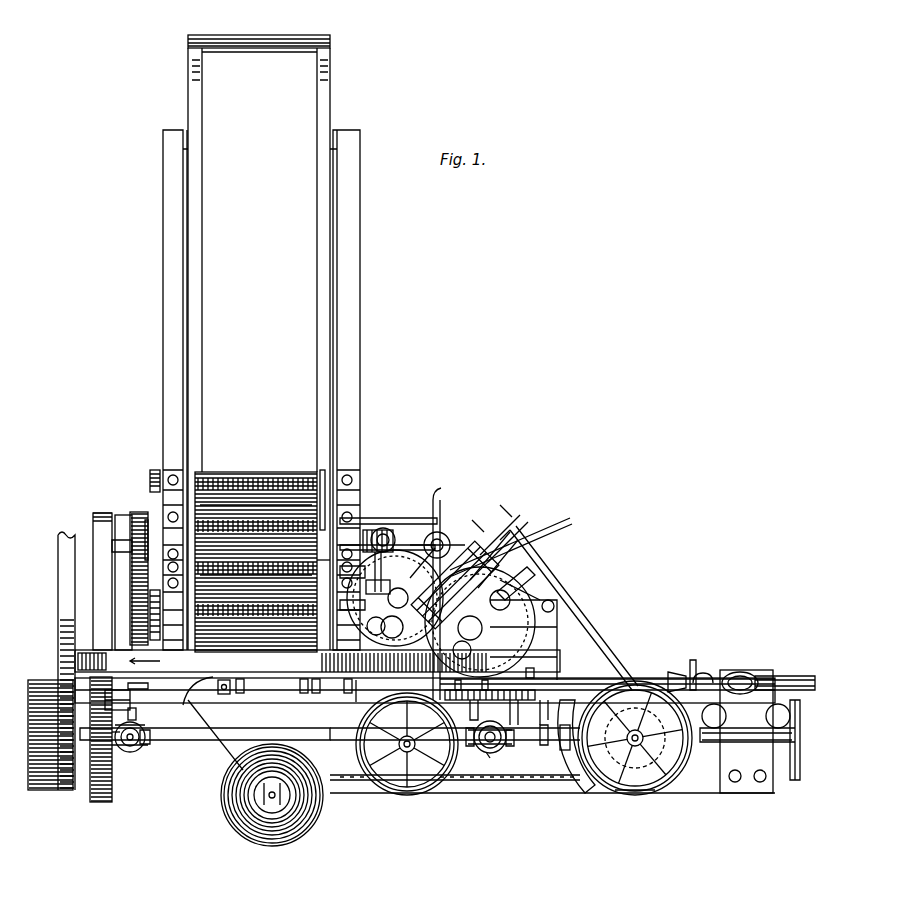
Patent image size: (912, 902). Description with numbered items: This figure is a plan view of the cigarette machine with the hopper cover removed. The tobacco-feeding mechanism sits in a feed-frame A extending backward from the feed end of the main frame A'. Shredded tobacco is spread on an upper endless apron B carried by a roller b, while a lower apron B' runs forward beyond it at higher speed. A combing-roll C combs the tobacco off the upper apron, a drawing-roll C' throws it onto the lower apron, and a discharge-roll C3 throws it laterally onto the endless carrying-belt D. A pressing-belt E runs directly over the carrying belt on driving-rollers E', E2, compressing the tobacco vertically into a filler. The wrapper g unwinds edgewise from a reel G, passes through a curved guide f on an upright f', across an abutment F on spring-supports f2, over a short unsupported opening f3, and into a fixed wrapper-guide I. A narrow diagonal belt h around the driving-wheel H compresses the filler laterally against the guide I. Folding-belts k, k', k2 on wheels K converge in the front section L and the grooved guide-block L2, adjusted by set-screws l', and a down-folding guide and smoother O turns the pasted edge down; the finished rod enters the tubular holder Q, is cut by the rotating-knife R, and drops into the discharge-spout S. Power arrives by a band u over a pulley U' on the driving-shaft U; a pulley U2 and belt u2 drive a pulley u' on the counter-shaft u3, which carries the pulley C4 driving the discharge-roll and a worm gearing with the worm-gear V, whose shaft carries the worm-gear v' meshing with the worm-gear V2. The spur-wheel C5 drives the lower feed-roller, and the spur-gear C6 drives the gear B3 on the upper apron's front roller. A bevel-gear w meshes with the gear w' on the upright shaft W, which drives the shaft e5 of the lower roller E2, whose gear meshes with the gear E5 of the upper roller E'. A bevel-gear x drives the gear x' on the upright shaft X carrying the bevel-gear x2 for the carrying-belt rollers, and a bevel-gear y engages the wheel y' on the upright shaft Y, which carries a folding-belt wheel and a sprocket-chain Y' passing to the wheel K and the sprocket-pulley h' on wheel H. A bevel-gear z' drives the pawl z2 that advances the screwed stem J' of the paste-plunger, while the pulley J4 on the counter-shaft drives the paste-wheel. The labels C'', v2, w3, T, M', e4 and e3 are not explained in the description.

The feed-frame A is at (250, 390).
The main frame A' is at (425, 707).
The upper endless apron B is at (259, 342).
The apron roller b is at (259, 53).
The lower endless apron B' is at (256, 567).
The apron-roller gear B3 is at (119, 559).
The combing-roll C is at (247, 562).
The drawing-roll C' is at (313, 569).
The brush roller C'' is at (256, 491).
The discharge-roll C3 is at (134, 584).
The counter-shaft pulley C4 is at (124, 518).
The spur-wheel C5 is at (162, 615).
The spur-gear C6 is at (150, 462).
The driving band u is at (55, 661).
The counter-shaft pulley u' is at (90, 521).
The belt u2 is at (102, 581).
The counter-shaft u3 is at (123, 582).
The bar v2 is at (320, 470).
The worm-gear v' is at (378, 543).
The worm-gear V is at (395, 520).
The worm-gear V2 is at (373, 630).
The shaft w3 is at (387, 560).
The diagonal compressing-belt h is at (415, 562).
The sprocket-pulley h' is at (468, 642).
The bevel-gear z' is at (437, 543).
The pawl z2 is at (506, 546).
The pulley J4 is at (436, 500).
The screwed stem J' is at (518, 547).
The outer folding-belt k2 is at (555, 598).
The sprocket-chain Y' is at (574, 671).
The pressing-belt E is at (317, 661).
The upper driving-roller E' is at (152, 661).
The lower driving-roller E2 is at (99, 661).
The gear E5 is at (134, 690).
The roller shaft e5 is at (141, 710).
The curved wrapper-guide f is at (198, 691).
The upright f' is at (223, 701).
The spring-supports f2 is at (272, 688).
The opening f3 is at (353, 687).
The abutment F is at (321, 688).
The fixed wrapper-guide I is at (363, 691).
The driving-shaft U is at (204, 725).
The pulley U' is at (50, 744).
The pulley U2 is at (109, 739).
The upright shaft W is at (138, 748).
The bevel-gear w is at (154, 747).
The bevel-gear w' is at (128, 750).
The wrapper g is at (212, 737).
The reel G is at (279, 795).
The driving-wheel H is at (441, 613).
The cylinder T is at (455, 585).
The arm M' is at (515, 617).
The down-folding guide and smoother O is at (537, 665).
The outer folding-belt k is at (607, 672).
The carrying-wheel K is at (524, 747).
The central folding-belt k' is at (455, 791).
The front section L is at (490, 697).
The carrying-belt D is at (472, 716).
The pins e4 is at (473, 692).
The upright shaft X is at (491, 746).
The bevel-gear x is at (468, 747).
The bevel-gear x' is at (488, 763).
The bevel-gear x2 is at (519, 743).
The guide-block L2 is at (525, 712).
The pin e3 is at (557, 706).
The set-screws l' is at (544, 735).
The bevel-gear y is at (569, 727).
The upright shaft Y is at (635, 738).
The bevel wheel y' is at (637, 803).
The rotating-knife R is at (743, 731).
The tubular holder Q is at (690, 671).
The discharge-spout S is at (768, 674).